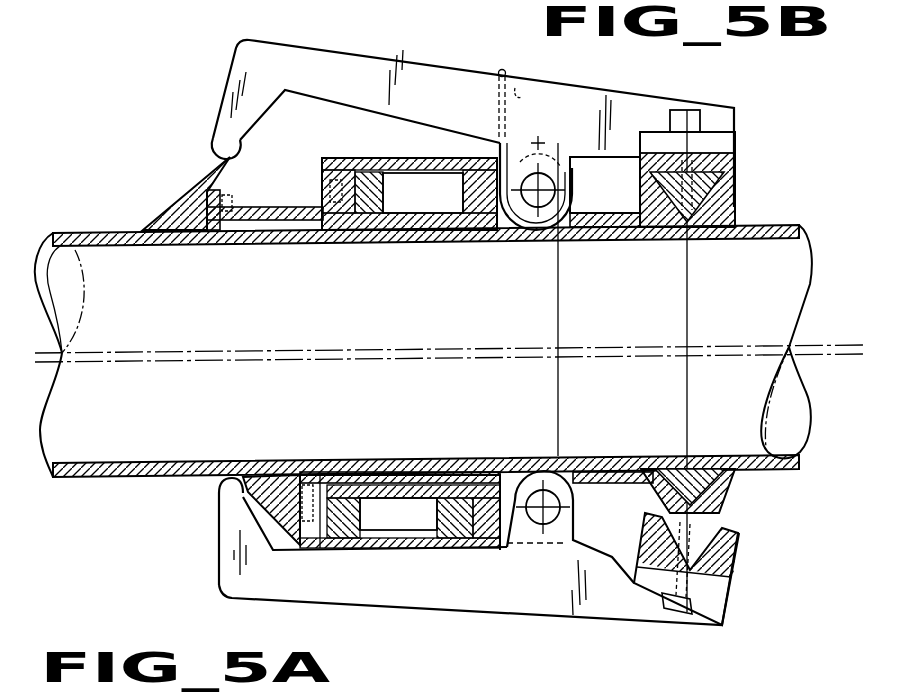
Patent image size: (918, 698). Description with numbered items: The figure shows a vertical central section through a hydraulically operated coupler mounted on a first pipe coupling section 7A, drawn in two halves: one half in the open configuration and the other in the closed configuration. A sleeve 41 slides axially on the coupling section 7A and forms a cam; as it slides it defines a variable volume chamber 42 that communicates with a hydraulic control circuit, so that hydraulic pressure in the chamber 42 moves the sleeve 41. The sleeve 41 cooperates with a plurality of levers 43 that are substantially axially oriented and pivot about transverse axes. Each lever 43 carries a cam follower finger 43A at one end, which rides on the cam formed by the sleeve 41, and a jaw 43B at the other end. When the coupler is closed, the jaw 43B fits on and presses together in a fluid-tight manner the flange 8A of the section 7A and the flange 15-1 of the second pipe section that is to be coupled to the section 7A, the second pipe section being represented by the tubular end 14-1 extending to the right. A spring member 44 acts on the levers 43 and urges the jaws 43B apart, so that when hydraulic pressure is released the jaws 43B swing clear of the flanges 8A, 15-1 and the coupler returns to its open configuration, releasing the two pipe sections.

In FIG. 5B, the first pipe coupling section 7A is at (106, 233).
In FIG. 5B, the tube end 14-1 is at (810, 284).
In FIG. 5B, the lever 43 is at (400, 64).
In FIG. 5A, the lever 43 is at (427, 603).
In FIG. 5B, the cam follower finger 43A is at (241, 152).
In FIG. 5A, the cam follower finger 43A is at (228, 485).
In FIG. 5B, the jaw 43B is at (737, 192).
In FIG. 5A, the jaw 43B is at (734, 573).
In FIG. 5B, the sleeve 41 is at (180, 188).
In FIG. 5A, the sleeve 41 is at (267, 517).
In FIG. 5B, the variable volume chamber 42 is at (430, 165).
In FIG. 5A, the variable volume chamber 42 is at (400, 530).
In FIG. 5B, the spring member 44 is at (514, 90).
In FIG. 5B, the flange 8A is at (652, 192).
In FIG. 5A, the flange 8A is at (657, 497).
In FIG. 5B, the flange 15-1 is at (736, 163).
In FIG. 5A, the flange 15-1 is at (732, 500).